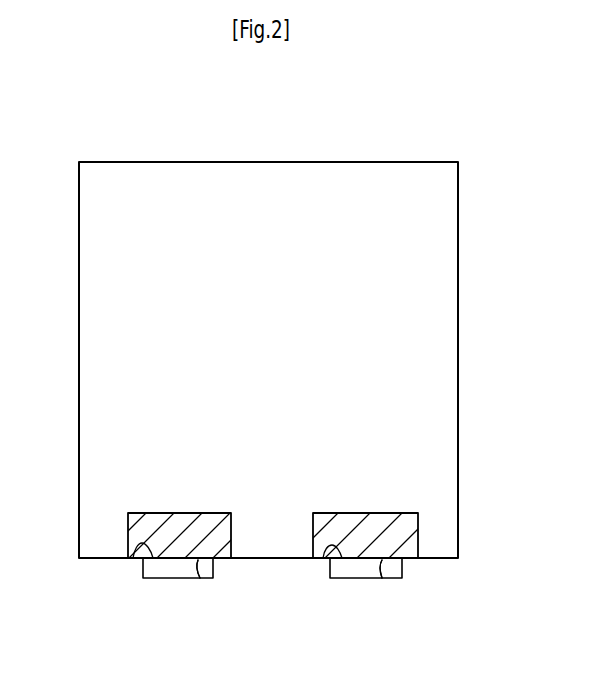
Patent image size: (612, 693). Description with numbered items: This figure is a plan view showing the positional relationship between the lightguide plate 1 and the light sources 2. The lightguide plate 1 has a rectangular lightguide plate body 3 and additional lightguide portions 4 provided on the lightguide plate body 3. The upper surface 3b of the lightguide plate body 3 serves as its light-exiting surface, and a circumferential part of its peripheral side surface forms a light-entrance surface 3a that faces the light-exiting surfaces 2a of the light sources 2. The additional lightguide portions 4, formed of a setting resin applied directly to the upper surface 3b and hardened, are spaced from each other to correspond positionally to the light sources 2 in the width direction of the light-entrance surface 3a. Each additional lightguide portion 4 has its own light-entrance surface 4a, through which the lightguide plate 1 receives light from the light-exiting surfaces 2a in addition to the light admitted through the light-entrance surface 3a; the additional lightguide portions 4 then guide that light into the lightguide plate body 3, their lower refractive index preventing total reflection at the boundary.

The lightguide plate 1 is at (302, 335).
The light sources 2 is at (178, 578).
The light-exiting surfaces of light sources 2a is at (135, 557).
The lightguide plate body 3 is at (467, 362).
The light-entrance surface 3a is at (200, 578).
The upper surface 3b is at (278, 318).
The additional lightguide portions 4 is at (226, 506).
The light-entrance surfaces of additional lightguide portions 4a is at (330, 612).